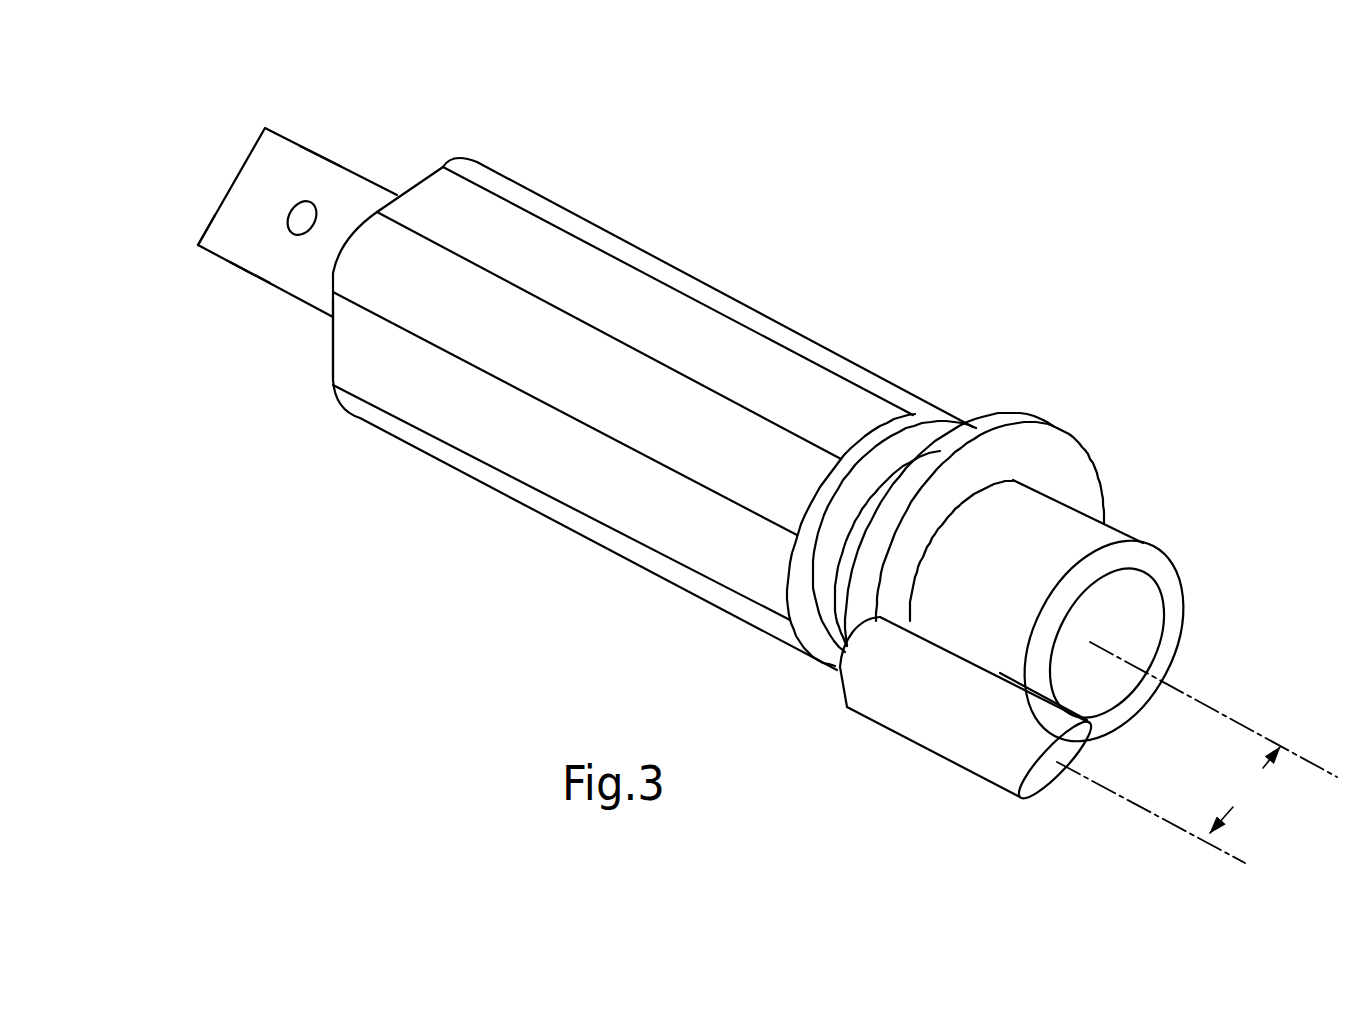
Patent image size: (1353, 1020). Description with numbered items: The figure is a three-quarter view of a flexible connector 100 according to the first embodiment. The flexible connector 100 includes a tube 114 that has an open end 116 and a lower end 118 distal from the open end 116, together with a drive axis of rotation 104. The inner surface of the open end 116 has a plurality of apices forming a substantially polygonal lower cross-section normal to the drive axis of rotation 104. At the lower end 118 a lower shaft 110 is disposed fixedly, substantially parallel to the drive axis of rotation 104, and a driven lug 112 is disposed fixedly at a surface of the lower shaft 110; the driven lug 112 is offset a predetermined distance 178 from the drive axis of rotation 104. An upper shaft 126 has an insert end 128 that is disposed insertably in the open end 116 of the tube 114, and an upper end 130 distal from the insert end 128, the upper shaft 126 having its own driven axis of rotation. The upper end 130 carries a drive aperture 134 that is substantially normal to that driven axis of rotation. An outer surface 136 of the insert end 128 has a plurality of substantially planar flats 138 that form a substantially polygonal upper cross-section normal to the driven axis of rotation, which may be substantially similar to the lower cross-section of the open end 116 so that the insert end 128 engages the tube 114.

The flexible connector 100 is at (440, 608).
The drive axis of rotation 104 is at (1205, 752).
The lower shaft 110 is at (1184, 653).
The driven lug 112 is at (1013, 803).
The tube 114 is at (572, 206).
The open end 116 is at (436, 166).
The lower end 118 is at (1108, 461).
The upper shaft 126 is at (245, 143).
The insert end 128 is at (314, 349).
The upper end 130 is at (186, 240).
The drive aperture 134 is at (318, 203).
The outer surface 136 is at (300, 165).
The flats 138 is at (246, 252).
The predetermined distance 178 is at (1245, 790).